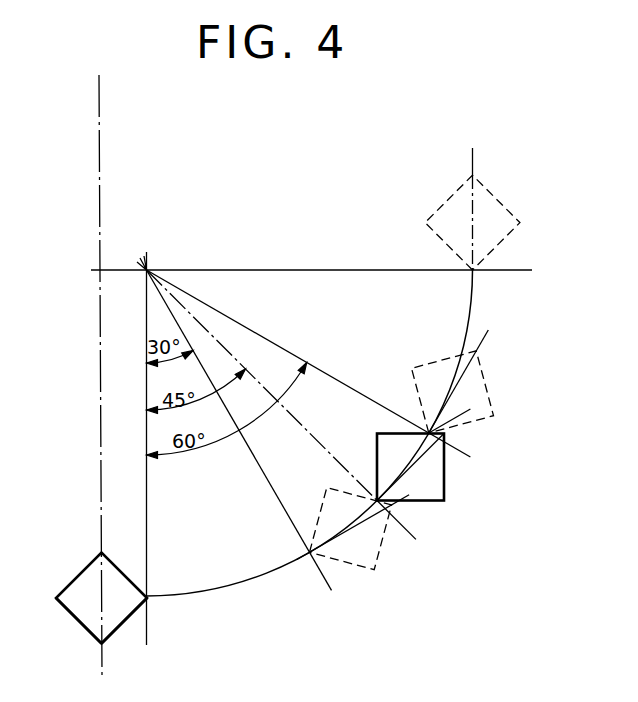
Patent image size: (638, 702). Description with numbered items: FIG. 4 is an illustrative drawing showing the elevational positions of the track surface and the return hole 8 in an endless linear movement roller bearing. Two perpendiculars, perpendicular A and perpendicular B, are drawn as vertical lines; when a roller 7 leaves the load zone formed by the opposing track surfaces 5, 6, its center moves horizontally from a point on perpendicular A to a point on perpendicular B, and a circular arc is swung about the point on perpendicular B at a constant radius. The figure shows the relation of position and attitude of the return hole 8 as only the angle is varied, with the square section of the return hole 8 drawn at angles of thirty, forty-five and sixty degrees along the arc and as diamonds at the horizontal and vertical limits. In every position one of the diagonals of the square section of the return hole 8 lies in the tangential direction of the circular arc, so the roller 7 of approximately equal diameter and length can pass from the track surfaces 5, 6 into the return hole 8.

The perpendicular A is at (99, 201).
The perpendicular B is at (311, 448).
The track surface 5 is at (83, 622).
The track surface 6 is at (116, 618).
The roller 7 is at (81, 590).
The return hole 8 is at (441, 487).